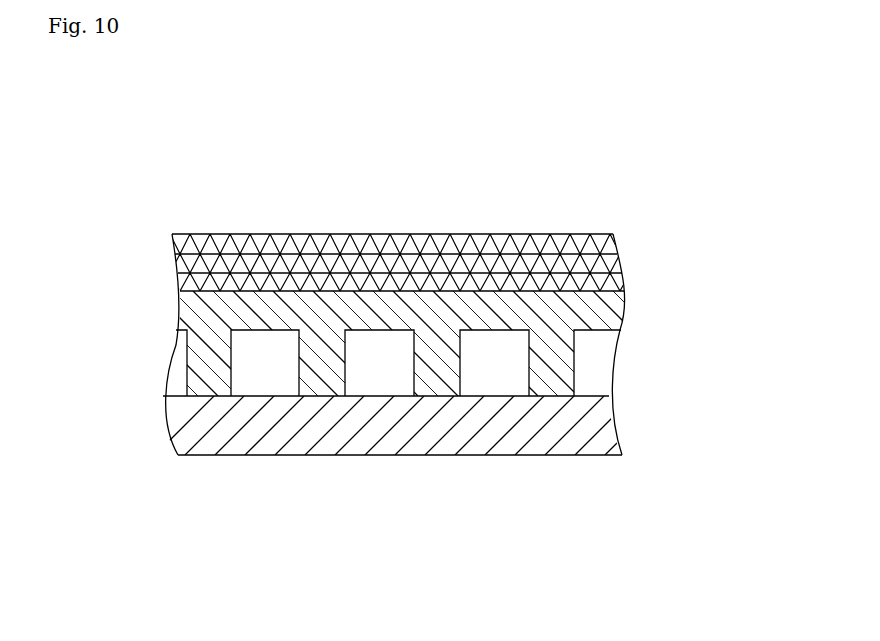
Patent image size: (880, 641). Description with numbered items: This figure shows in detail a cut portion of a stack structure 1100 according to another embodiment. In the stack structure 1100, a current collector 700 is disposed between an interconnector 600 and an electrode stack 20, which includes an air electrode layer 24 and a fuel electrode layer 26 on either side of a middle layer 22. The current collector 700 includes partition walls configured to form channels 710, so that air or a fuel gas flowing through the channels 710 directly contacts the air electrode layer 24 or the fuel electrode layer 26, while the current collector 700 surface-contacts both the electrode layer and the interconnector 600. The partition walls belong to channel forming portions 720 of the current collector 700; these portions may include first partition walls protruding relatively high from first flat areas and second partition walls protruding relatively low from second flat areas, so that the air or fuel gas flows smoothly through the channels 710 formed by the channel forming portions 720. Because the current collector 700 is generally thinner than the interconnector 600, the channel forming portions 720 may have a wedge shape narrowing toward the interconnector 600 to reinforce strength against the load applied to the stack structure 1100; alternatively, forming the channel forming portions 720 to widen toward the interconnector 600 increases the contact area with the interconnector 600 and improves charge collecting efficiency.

The stack structure 1100 is at (405, 78).
The polarizing film stack 20 is at (182, 210).
The fuel electrode layer 26 is at (170, 245).
The polarizer layer 22 is at (176, 265).
The air electrode layer 24 is at (181, 285).
The current collector 700 is at (447, 308).
The channels 710 is at (247, 358).
The channel forming portions 720 is at (563, 373).
The interconnector 600 is at (500, 440).